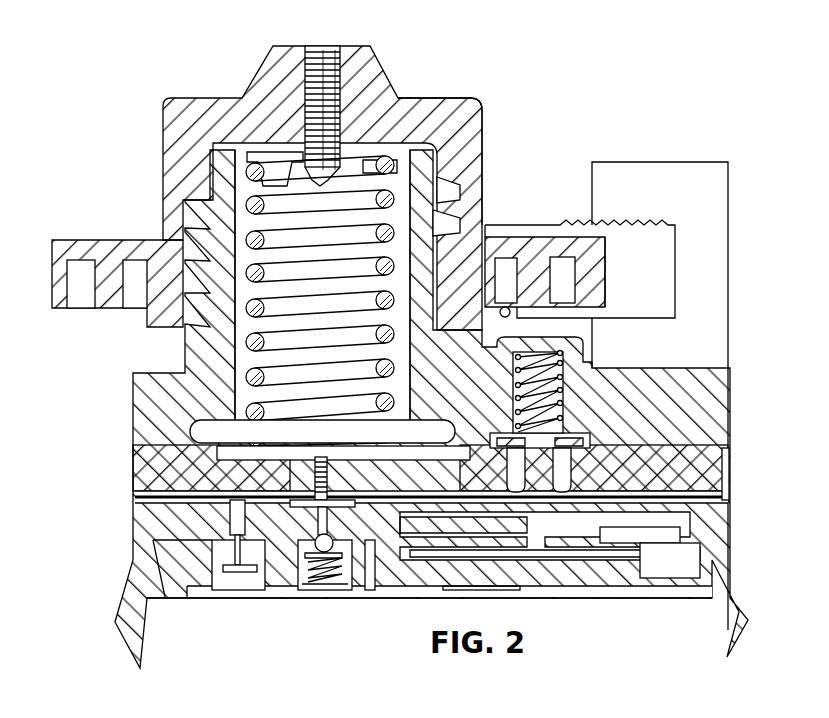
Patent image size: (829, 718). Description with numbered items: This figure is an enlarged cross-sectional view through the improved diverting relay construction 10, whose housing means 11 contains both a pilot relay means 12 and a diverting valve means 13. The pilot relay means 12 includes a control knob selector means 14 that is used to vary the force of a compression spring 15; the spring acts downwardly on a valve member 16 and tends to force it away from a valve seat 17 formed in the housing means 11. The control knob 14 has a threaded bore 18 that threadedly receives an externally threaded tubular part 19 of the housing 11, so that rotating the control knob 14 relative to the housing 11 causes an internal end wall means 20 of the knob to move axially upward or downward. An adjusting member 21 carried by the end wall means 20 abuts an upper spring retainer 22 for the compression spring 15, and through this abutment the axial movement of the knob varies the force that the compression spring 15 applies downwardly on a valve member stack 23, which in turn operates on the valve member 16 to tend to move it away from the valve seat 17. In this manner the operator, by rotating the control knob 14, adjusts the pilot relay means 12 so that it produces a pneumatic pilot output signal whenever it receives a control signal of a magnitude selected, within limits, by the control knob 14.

The diverting relay construction 10 is at (610, 90).
The housing means 11 is at (723, 395).
The pilot relay means 12 is at (283, 548).
The diverting valve means 13 is at (607, 479).
The control knob selector means 14 is at (430, 106).
The compression spring 15 is at (246, 203).
The valve member 16 is at (322, 553).
The valve seat 17 is at (362, 562).
The threaded bore 18 is at (183, 223).
The externally threaded tubular part 19 is at (458, 183).
The internal end wall means 20 is at (392, 98).
The adjusting member 21 is at (312, 82).
The upper spring retainer 22 is at (262, 157).
The valve member stack 23 is at (302, 480).